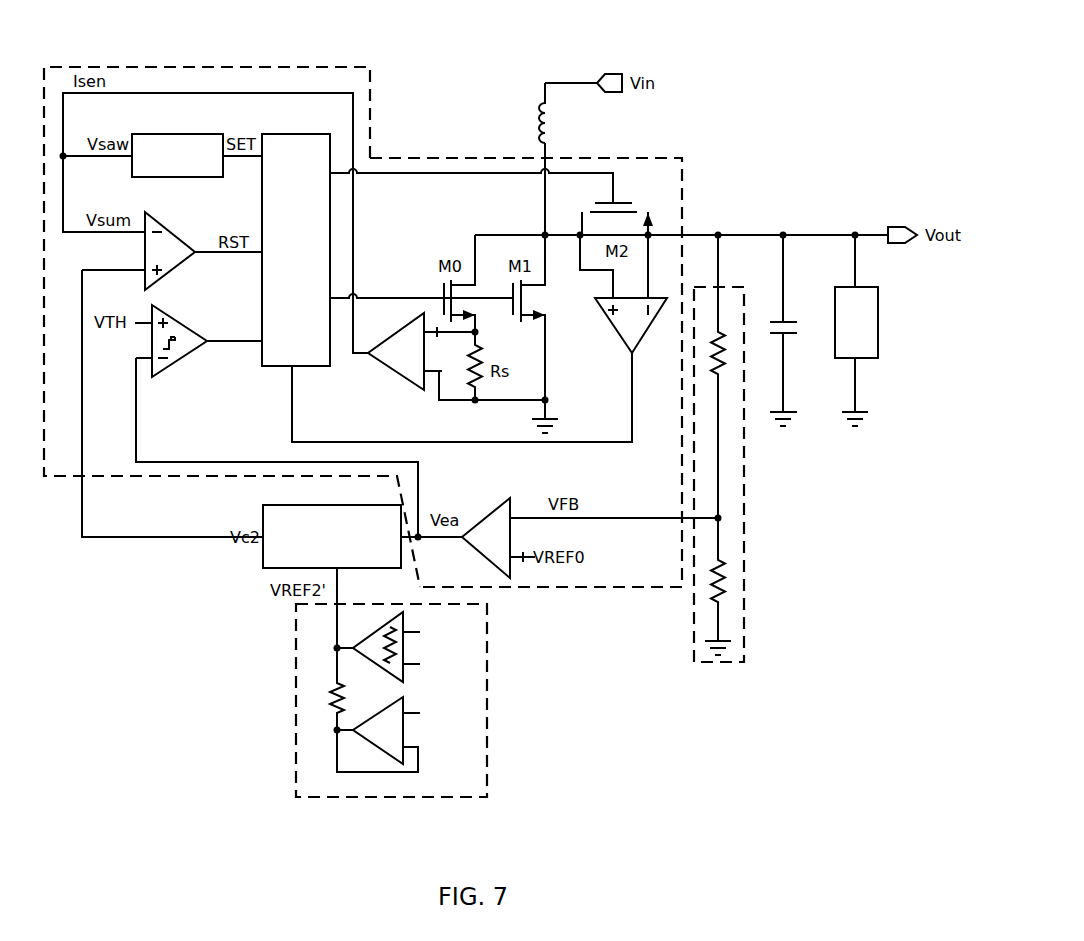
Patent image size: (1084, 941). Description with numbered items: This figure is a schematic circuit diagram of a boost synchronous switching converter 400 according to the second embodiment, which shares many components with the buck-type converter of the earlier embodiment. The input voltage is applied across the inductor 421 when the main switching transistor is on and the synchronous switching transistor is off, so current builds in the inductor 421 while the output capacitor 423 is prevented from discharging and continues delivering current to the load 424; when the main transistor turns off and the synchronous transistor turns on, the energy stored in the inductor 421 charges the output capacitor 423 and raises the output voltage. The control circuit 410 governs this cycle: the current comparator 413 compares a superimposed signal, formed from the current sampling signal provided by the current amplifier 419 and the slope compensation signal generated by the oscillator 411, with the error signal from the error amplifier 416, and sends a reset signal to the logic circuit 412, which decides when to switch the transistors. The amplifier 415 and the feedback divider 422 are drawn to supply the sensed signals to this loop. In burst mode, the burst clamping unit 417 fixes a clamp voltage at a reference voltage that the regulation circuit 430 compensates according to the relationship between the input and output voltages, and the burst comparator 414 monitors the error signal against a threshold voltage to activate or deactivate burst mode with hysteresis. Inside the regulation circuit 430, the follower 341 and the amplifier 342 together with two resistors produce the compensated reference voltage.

The switching converter 400 is at (737, 48).
The control circuit 410 is at (298, 61).
The oscillator 411 is at (158, 134).
The logic circuit 412 is at (296, 250).
The current comparator 413 is at (157, 221).
The burst comparator 414 is at (174, 319).
The current sense amplifier 415 is at (620, 335).
The error amplifier 416 is at (505, 501).
The burst clamping unit 417 is at (265, 505).
The current amplifier 419 is at (398, 332).
The inductor 421 is at (525, 112).
The feedback voltage divider 422 is at (755, 509).
The output capacitor 423 is at (801, 309).
The load 424 is at (884, 320).
The regulation circuit 430 is at (366, 700).
The voltage-controlled current source 341 is at (392, 703).
The voltage-controlled current source 342 is at (385, 625).